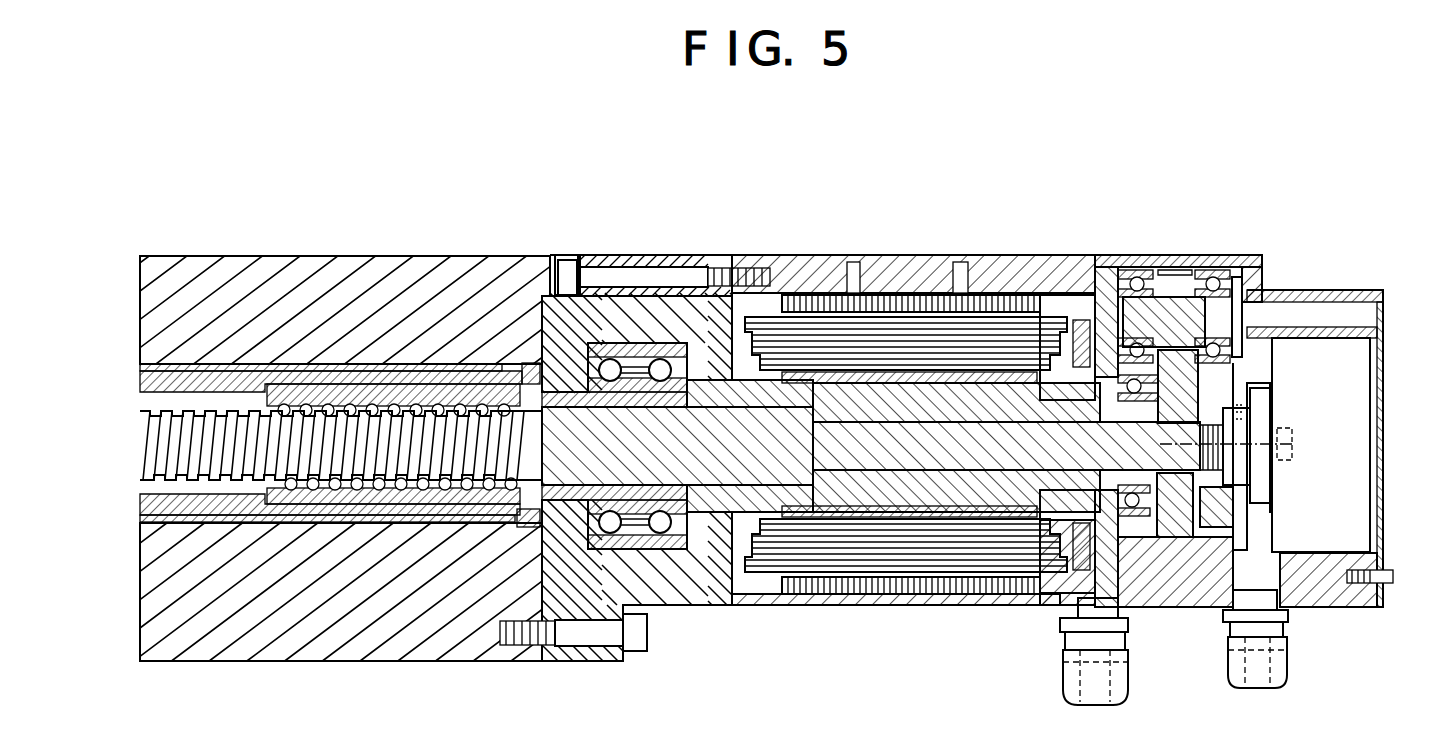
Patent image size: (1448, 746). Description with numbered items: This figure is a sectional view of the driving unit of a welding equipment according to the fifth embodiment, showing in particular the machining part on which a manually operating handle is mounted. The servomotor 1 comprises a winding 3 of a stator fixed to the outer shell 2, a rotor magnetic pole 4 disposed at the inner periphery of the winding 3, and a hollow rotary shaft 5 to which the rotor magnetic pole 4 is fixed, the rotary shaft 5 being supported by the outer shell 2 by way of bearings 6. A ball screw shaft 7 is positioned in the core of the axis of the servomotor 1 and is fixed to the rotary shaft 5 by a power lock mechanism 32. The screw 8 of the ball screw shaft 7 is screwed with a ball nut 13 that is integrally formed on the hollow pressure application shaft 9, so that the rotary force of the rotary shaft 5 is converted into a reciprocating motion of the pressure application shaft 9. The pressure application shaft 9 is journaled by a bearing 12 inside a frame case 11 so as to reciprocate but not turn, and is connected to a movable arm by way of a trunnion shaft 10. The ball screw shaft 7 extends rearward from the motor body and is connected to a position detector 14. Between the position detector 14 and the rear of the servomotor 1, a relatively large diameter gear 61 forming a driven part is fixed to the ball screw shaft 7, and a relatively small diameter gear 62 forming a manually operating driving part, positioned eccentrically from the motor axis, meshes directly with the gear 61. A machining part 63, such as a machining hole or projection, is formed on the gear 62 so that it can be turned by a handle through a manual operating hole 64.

The servomotor 1 is at (790, 242).
The outer shell 2 is at (908, 270).
The winding 3 is at (980, 335).
The rotor magnetic pole 4 is at (878, 517).
The rotary shaft 5 is at (948, 487).
The bearings 6 is at (605, 357).
The ball screw shaft 7 is at (678, 430).
The screw 8 is at (515, 527).
The pressure application shaft 9 is at (183, 376).
The trunnion shaft 10 is at (312, 406).
The frame case 11 is at (318, 307).
The bearing 12 is at (300, 523).
The ball nut 13 is at (393, 390).
The position detector 14 is at (1337, 438).
The power lock mechanism 32 is at (716, 400).
The gear 61 is at (1172, 607).
The gear 62 is at (1172, 296).
The machining part 63 is at (1223, 317).
The manual operating hole 64 is at (1335, 310).